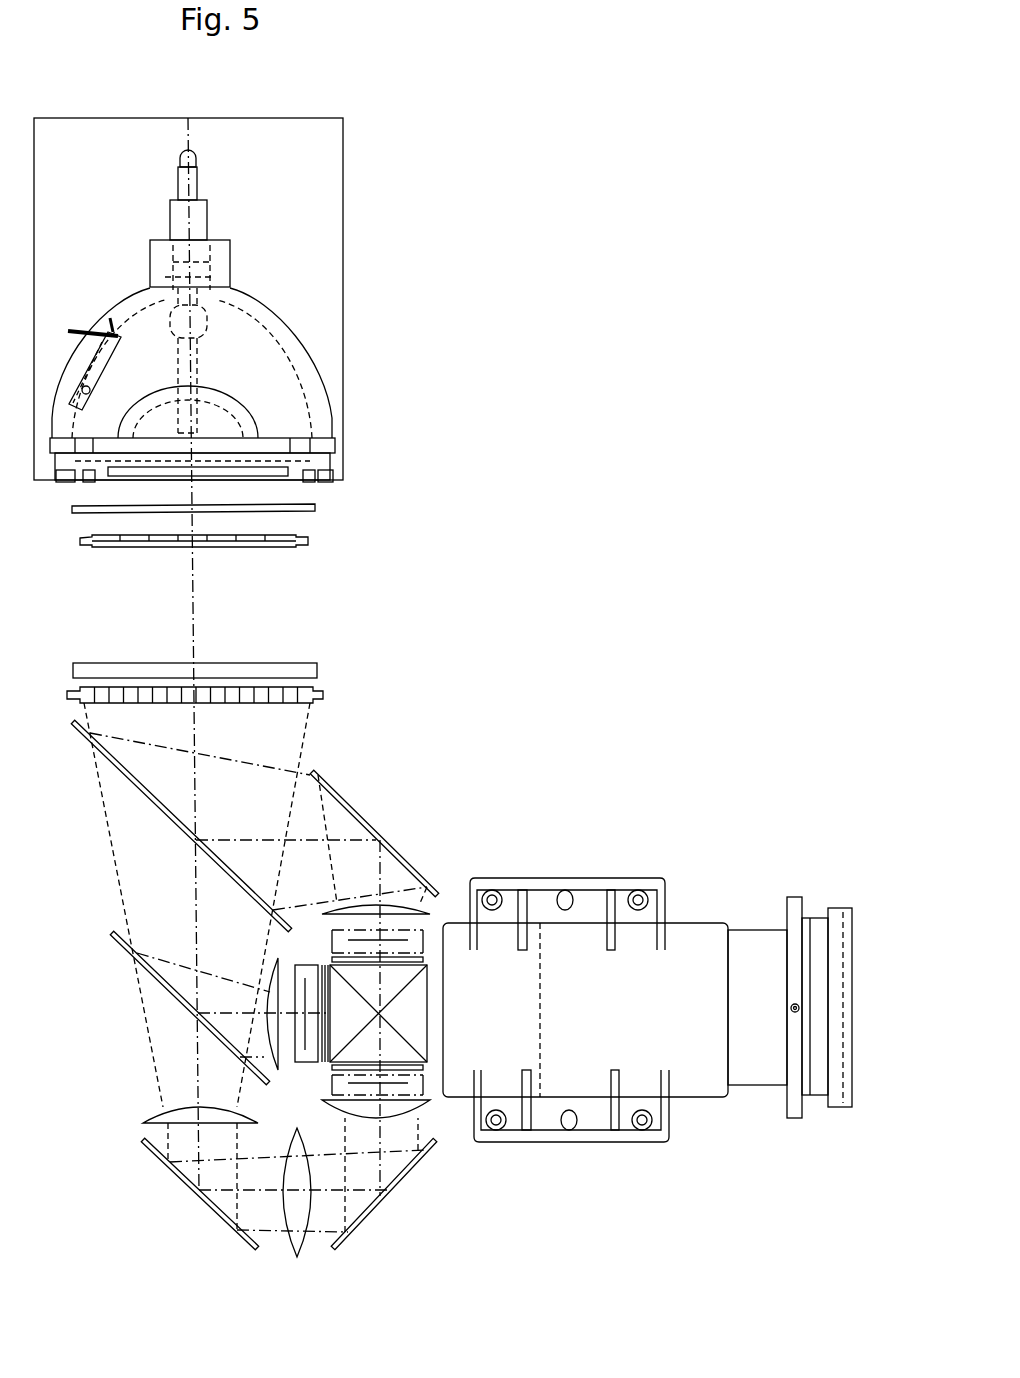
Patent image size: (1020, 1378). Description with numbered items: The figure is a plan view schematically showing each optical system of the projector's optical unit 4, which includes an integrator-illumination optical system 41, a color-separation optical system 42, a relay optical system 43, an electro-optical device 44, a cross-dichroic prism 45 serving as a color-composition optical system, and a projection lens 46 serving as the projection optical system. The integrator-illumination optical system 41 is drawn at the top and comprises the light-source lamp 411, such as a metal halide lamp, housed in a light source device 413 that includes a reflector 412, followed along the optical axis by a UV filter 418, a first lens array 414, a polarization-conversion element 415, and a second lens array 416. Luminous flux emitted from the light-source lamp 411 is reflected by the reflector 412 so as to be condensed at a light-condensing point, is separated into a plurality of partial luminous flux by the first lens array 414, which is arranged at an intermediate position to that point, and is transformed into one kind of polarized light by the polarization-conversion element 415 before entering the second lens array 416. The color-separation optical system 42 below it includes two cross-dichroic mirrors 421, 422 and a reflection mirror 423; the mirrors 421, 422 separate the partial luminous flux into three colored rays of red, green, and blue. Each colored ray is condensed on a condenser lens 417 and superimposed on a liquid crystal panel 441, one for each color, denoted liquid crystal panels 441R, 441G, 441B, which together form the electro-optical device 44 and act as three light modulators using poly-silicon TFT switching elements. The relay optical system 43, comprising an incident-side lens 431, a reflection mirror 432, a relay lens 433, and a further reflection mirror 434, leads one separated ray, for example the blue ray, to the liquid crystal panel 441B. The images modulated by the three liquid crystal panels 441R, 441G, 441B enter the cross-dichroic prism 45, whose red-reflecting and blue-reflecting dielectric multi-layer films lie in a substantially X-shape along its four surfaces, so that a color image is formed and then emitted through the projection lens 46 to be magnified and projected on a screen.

The optical unit 4 is at (550, 445).
The integrator-illumination optical system 41 is at (375, 575).
The light-source lamp 411 is at (188, 358).
The reflector 412 is at (300, 377).
The light source device 413 is at (424, 279).
The first lens array 414 is at (237, 547).
The polarization-conversion element 415 is at (263, 668).
The second lens array 416 is at (293, 703).
The condenser lens 417 is at (393, 900).
The UV filter 418 is at (300, 497).
The color-separation optical system 42 is at (105, 866).
The cross-dichroic mirror 421 is at (157, 808).
The cross-dichroic mirror 422 is at (113, 935).
The reflection mirror 423 is at (342, 800).
The relay optical system 43 is at (205, 1235).
The incident-side lens 431 is at (150, 1110).
The reflection mirror 432 is at (153, 1155).
The relay lens 433 is at (297, 1255).
The reflection mirror 434 is at (370, 1210).
The electro-optical device 44 is at (435, 925).
The liquid crystal panel 441 is at (423, 1028).
The liquid crystal panel for red 441R is at (397, 948).
The liquid crystal panel for green 441G is at (300, 1047).
The liquid crystal panel for blue 441B is at (397, 1080).
The cross-dichroic prism 45 is at (425, 1003).
The projection lens 46 is at (752, 947).